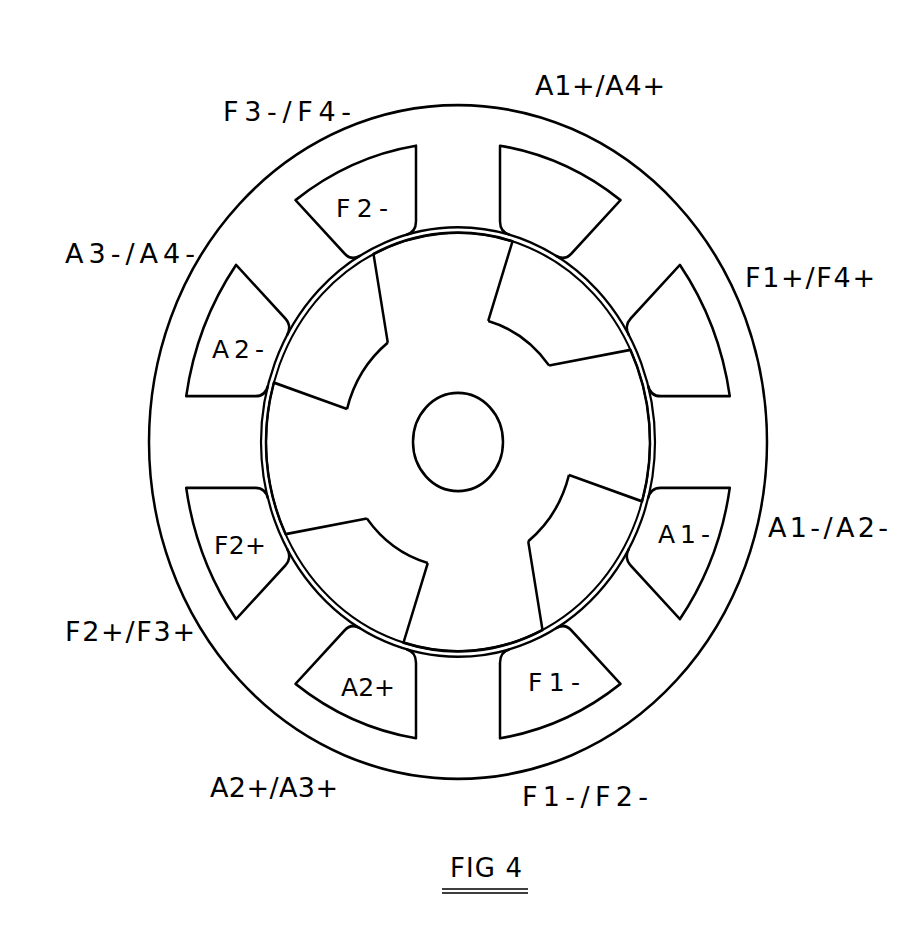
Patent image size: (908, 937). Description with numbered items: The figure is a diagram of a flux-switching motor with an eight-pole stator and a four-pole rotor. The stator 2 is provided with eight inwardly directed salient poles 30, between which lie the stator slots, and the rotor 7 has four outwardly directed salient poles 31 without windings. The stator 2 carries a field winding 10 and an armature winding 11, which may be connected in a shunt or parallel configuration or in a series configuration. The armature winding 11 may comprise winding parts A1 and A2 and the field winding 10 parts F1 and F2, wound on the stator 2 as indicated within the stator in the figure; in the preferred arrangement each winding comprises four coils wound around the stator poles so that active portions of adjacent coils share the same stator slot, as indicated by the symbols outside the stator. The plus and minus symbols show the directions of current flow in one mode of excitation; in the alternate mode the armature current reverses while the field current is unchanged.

The stator 2 is at (754, 597).
The rotor 7 is at (548, 328).
The field winding 10 is at (708, 382).
The armature winding 11 is at (588, 203).
The inwardly directed salient poles 30 is at (643, 632).
The outwardly directed salient poles 31 is at (456, 262).